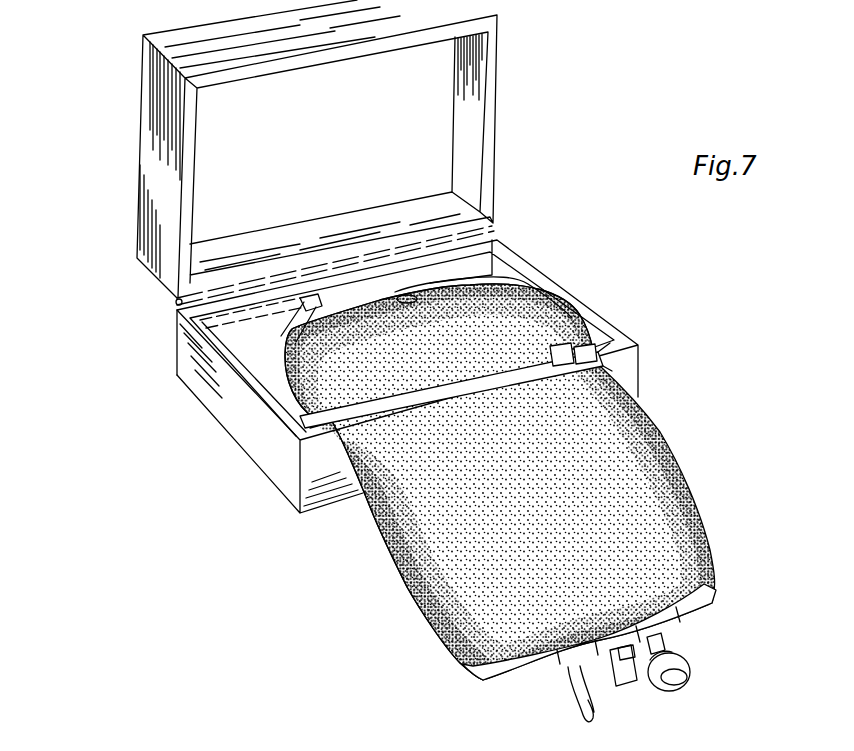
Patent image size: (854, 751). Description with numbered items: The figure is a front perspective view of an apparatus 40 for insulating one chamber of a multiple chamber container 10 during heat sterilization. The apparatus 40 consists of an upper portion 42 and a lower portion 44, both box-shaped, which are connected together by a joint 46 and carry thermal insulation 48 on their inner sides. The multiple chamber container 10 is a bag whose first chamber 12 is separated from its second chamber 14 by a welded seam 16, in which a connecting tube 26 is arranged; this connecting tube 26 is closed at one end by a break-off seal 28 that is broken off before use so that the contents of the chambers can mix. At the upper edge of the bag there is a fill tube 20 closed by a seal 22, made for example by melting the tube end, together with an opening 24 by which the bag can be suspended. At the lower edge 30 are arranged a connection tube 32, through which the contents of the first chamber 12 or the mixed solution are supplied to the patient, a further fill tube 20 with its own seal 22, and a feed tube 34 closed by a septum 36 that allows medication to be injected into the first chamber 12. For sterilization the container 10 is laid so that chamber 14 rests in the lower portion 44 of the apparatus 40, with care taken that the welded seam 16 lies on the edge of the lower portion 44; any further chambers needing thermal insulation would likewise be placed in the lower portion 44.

The multiple chamber container 10 is at (675, 462).
The first chamber 12 is at (410, 562).
The second chamber 14 is at (288, 392).
The welded seam 16 is at (298, 446).
The fill tube 20 is at (614, 684).
The seal 22 is at (632, 678).
The opening 24 is at (507, 256).
The connecting tube 26 is at (572, 304).
The break-off seal 28 is at (613, 369).
The lower edge 30 is at (495, 672).
The connection tube 32 is at (580, 708).
The feed tube 34 is at (663, 637).
The septum 36 is at (673, 673).
The apparatus 40 is at (100, 173).
The upper portion 42 is at (203, 47).
The lower portion 44 is at (283, 502).
The joint 46 is at (172, 303).
The thermal insulation 48 is at (430, 103).